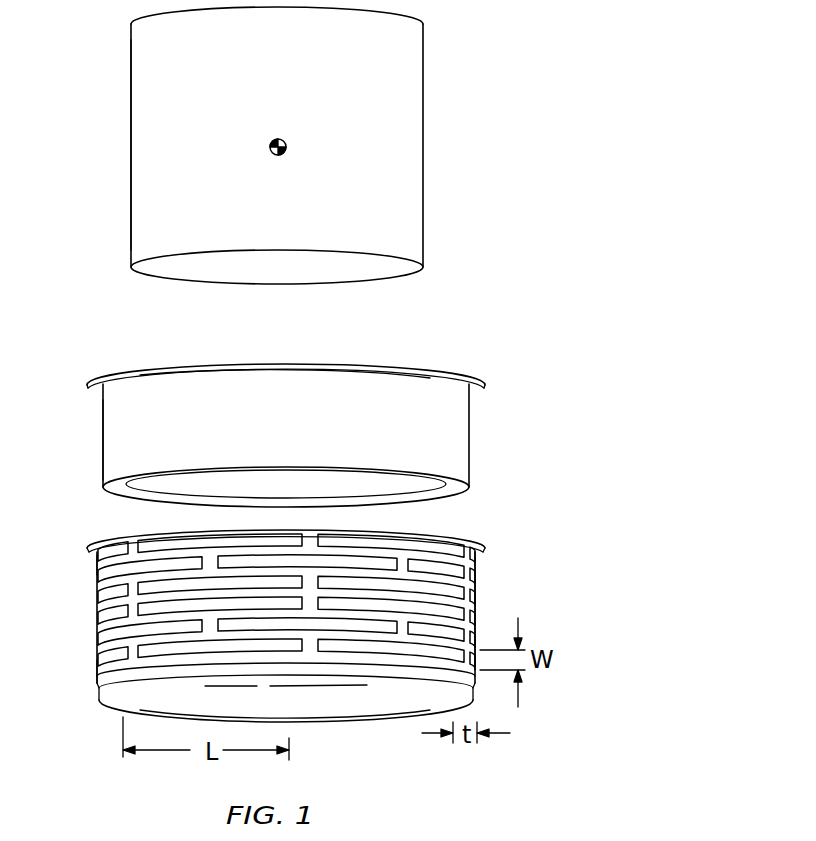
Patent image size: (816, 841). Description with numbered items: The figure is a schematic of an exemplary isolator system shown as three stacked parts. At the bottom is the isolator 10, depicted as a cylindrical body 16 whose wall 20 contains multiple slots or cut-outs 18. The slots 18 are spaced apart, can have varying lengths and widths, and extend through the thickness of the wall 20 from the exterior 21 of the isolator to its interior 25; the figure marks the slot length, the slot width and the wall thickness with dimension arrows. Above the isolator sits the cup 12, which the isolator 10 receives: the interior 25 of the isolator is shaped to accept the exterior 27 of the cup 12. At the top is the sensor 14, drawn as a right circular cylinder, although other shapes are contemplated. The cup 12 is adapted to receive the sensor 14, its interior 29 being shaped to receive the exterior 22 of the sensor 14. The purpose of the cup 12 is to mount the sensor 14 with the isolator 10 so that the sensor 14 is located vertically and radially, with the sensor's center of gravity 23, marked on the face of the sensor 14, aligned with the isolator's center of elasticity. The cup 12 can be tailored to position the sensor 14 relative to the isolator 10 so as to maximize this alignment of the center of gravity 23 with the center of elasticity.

The sensor 14 is at (423, 66).
The exterior of the sensor 22 is at (130, 90).
The center of gravity 23 is at (271, 153).
The cup 12 is at (476, 392).
The interior of the cup 29 is at (420, 358).
The exterior of the cup 27 is at (103, 433).
The isolator 10 is at (485, 548).
The slots 18 is at (105, 618).
The wall 20 is at (95, 568).
The cylindrical body 16 is at (477, 590).
The exterior of the isolator 21 is at (50, 683).
The interior of the isolator 25 is at (333, 728).